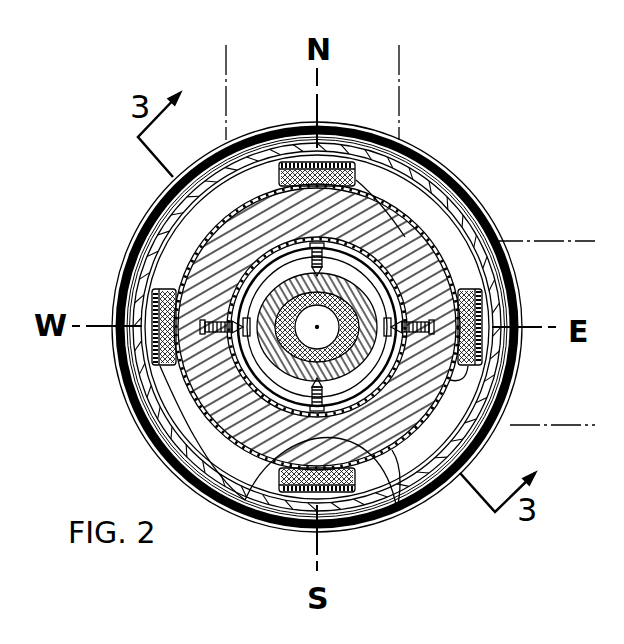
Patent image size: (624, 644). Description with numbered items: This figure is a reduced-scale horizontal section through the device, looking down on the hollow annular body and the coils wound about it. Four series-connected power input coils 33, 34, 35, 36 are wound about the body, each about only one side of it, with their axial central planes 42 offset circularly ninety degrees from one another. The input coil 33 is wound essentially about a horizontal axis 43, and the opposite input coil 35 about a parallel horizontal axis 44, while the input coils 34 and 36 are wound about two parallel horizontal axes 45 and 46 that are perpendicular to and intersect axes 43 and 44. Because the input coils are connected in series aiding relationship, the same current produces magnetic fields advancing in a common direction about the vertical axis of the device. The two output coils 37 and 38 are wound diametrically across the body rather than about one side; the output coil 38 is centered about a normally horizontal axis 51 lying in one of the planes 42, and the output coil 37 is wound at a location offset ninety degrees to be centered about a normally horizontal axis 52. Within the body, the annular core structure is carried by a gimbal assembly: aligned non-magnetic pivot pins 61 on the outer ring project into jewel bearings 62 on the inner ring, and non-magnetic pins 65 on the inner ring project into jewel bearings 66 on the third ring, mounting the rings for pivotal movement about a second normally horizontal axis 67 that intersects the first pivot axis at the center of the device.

The input coil 33 is at (135, 398).
The input coil 34 is at (365, 180).
The input coil 35 is at (504, 356).
The input coil 36 is at (343, 528).
The output coil 37 is at (322, 162).
The output coil 38 is at (152, 298).
The axial central plane 42 is at (318, 100).
The axis 43 is at (226, 84).
The axis 44 is at (399, 100).
The axis 45 is at (550, 241).
The axis 46 is at (522, 428).
The axis 51 is at (313, 553).
The axis 52 is at (522, 327).
The pivot pin 61 is at (204, 256).
The jewel bearing 62 is at (183, 392).
The pin 65 is at (244, 500).
The jewel bearing 66 is at (405, 237).
The axis 67 is at (392, 507).